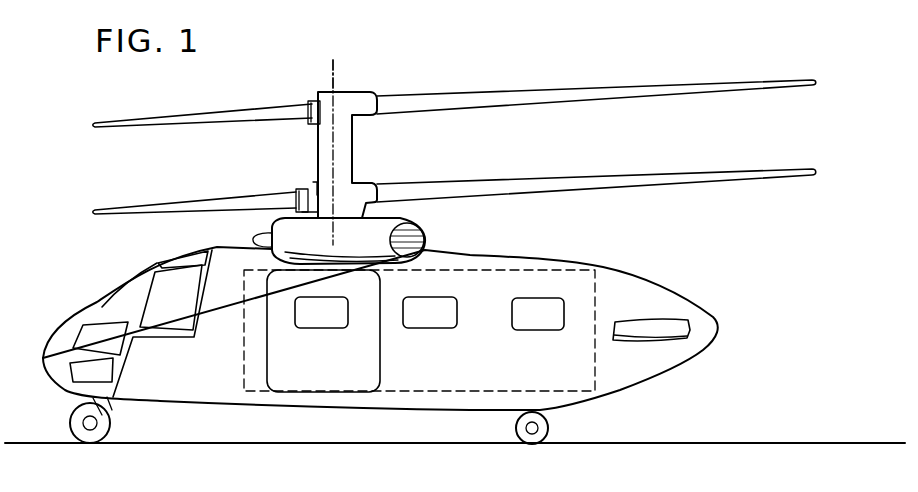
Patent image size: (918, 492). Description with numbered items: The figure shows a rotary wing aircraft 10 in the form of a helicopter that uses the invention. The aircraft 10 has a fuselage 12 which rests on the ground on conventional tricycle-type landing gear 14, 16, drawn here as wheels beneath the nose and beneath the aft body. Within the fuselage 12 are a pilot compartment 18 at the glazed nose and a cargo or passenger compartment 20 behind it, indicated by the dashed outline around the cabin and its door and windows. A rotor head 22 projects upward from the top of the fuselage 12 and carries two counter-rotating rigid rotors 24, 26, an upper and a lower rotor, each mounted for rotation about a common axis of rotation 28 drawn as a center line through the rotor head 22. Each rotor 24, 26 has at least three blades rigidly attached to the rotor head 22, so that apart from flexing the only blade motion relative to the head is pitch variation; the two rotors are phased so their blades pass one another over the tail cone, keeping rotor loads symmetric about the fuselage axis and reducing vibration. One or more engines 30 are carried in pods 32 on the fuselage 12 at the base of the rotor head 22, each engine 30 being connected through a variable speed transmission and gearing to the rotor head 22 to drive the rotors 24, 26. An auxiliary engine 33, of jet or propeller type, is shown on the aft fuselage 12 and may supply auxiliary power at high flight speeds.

The rotary wing aircraft 10 is at (531, 76).
The fuselage 12 is at (650, 370).
The landing gear 14 is at (72, 418).
The landing gear 16 is at (548, 433).
The pilot compartment 18 is at (163, 290).
The cargo or passenger compartment 20 is at (583, 298).
The rotor head 22 is at (347, 157).
The rigid rotor 24 is at (243, 115).
The rigid rotor 26 is at (217, 200).
The axis of rotation 28 is at (333, 78).
The engine 30 is at (373, 230).
The pod 32 is at (303, 238).
The auxiliary engine 33 is at (656, 323).